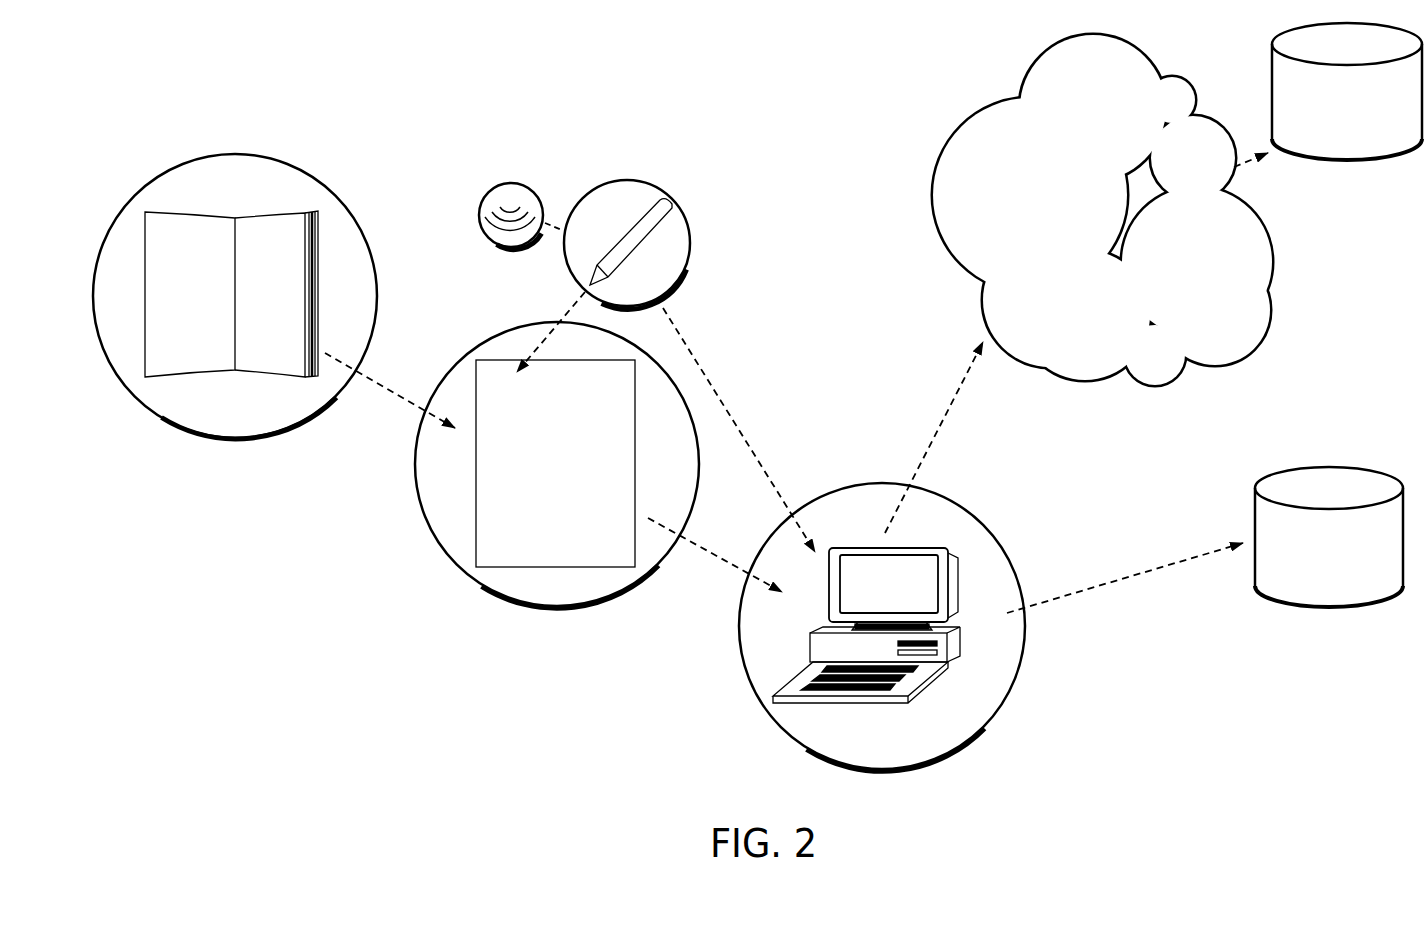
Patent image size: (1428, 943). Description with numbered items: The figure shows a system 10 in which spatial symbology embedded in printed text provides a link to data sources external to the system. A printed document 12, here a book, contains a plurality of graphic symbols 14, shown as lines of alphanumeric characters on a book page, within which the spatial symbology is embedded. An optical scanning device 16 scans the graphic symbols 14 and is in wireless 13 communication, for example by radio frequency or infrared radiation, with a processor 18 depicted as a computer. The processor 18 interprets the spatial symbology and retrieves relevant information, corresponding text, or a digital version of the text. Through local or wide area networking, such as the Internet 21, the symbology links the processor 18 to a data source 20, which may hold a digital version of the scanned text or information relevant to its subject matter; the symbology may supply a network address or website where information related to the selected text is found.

The system 10 is at (580, 146).
The printed document 12 is at (222, 213).
The wireless communication 13 is at (504, 183).
The graphic symbols 14 is at (497, 531).
The optical scanning device 16 is at (687, 226).
The processor 18 is at (955, 660).
The data source 20 is at (1329, 125).
The Internet 21 is at (1113, 318).